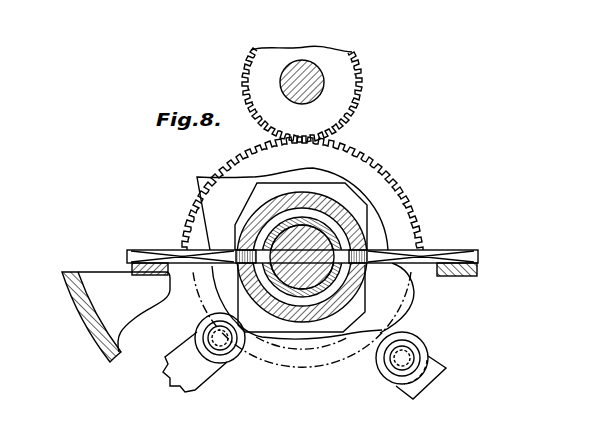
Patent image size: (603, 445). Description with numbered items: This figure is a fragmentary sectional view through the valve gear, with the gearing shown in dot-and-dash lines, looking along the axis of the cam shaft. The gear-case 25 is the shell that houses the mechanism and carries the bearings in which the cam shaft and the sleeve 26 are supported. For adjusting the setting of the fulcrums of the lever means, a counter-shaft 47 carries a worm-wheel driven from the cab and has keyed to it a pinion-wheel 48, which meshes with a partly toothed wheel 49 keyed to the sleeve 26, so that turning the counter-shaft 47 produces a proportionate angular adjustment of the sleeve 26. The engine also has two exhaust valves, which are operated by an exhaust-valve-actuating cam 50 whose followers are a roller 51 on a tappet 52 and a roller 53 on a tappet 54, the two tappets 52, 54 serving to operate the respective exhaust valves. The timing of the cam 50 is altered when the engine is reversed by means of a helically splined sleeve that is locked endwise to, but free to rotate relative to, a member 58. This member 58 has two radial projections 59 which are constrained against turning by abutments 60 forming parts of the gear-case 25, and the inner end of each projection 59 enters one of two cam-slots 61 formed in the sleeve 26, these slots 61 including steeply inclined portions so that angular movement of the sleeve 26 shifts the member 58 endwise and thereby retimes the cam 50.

The gear-case 25 is at (73, 305).
The sleeve 26 is at (326, 265).
The counter-shaft 47 is at (314, 85).
The pinion-wheel 48 is at (356, 113).
The partly toothed wheel 49 is at (419, 220).
The exhaust-valve-actuating cam 50 is at (364, 206).
The roller 51 is at (265, 345).
The tappet 52 is at (215, 378).
The roller 53 is at (389, 370).
The tappet 54 is at (398, 392).
The member 58 is at (308, 268).
The radial projections 59 is at (148, 250).
The abutments 60 is at (134, 251).
The cam-slots 61 is at (255, 212).